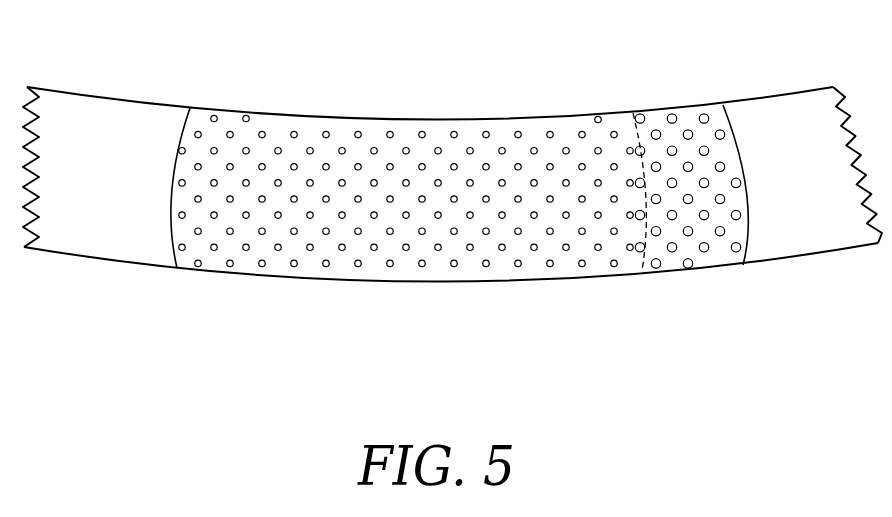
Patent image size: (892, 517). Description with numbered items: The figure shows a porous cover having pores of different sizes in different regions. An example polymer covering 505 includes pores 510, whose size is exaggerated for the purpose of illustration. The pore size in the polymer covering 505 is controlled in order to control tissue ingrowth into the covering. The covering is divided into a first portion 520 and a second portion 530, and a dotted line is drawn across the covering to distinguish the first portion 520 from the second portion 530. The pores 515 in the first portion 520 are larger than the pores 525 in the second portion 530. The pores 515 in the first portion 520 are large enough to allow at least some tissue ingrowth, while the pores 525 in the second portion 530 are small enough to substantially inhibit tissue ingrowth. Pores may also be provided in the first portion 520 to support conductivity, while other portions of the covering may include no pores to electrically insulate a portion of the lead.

The polymer covering 505 is at (533, 117).
The pores 510 is at (598, 116).
The pores in first portion 515 is at (704, 252).
The first portion 520 is at (678, 63).
The pores in second portion 525 is at (518, 267).
The second portion 530 is at (364, 76).